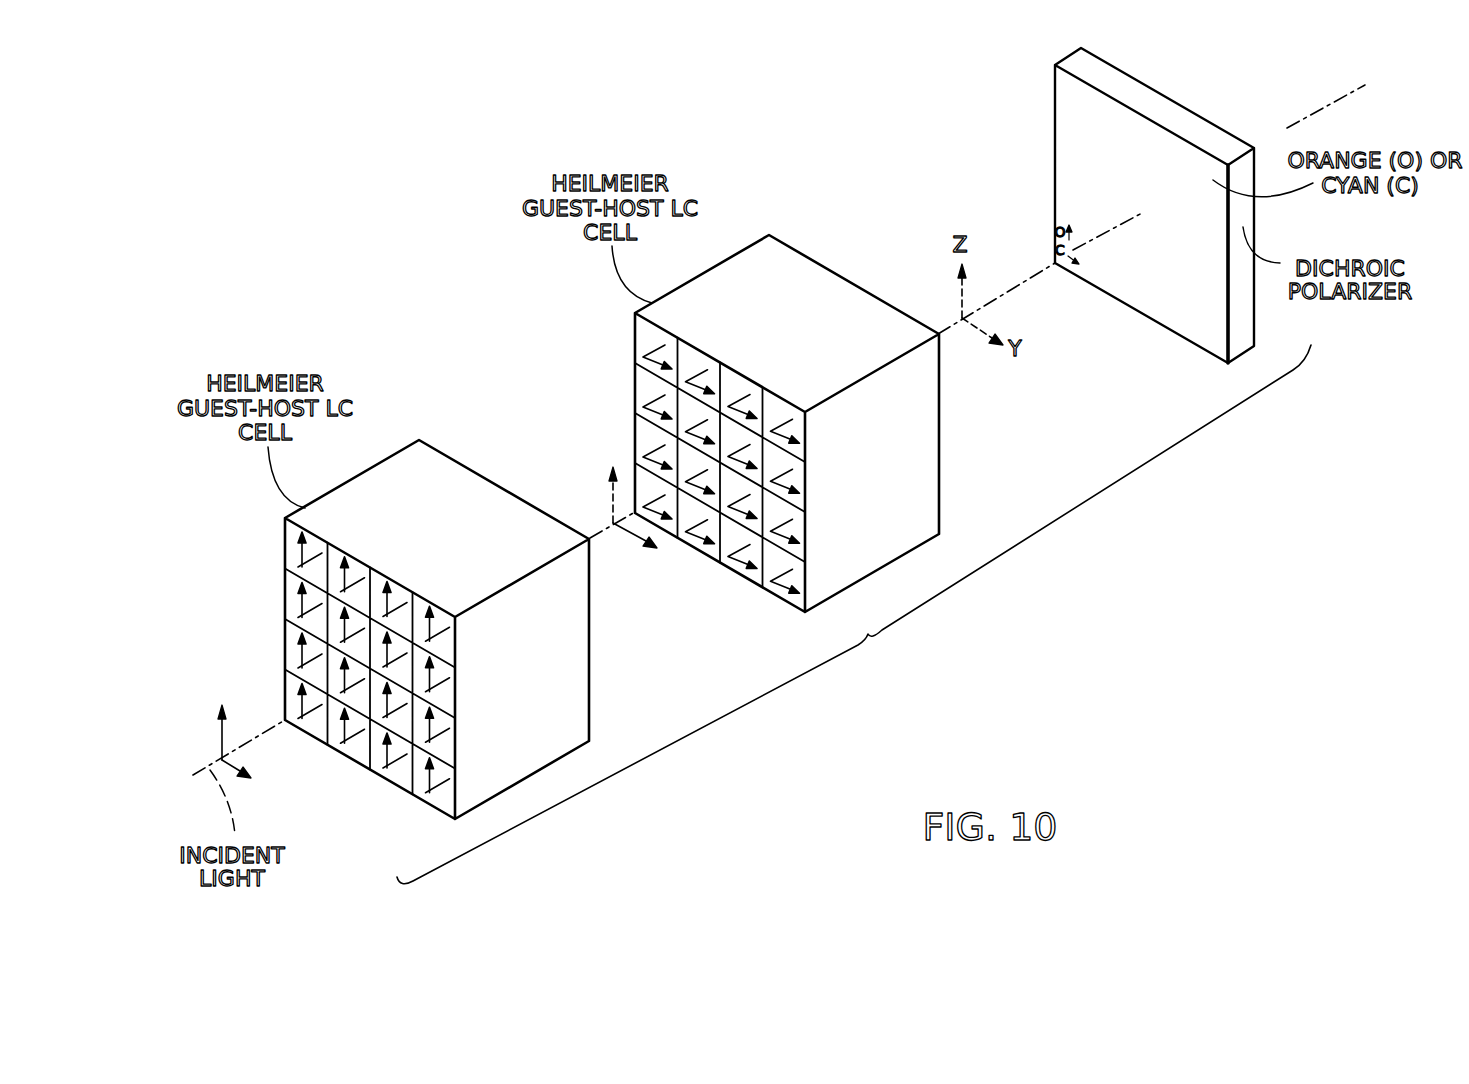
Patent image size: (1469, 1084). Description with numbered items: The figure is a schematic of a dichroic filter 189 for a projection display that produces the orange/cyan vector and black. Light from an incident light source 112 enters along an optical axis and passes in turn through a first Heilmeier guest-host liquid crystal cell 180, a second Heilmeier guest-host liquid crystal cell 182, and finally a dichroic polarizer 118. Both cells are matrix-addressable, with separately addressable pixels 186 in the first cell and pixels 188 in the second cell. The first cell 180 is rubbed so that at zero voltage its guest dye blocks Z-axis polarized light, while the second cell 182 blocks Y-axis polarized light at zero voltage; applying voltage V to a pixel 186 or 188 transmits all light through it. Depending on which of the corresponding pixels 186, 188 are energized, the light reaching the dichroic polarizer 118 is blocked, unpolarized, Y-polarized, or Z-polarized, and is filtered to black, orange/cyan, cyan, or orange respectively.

The incident light source 112 is at (190, 775).
The dichroic polarizer 118 is at (1243, 330).
The first Heilmeier guest-host liquid crystal cell 180 is at (550, 688).
The second Heilmeier guest-host liquid crystal cell 182 is at (897, 482).
The pixels of the first guest-host cell 186 is at (370, 703).
The pixels of the second guest-host cell 188 is at (720, 502).
The filter 189 is at (975, 587).